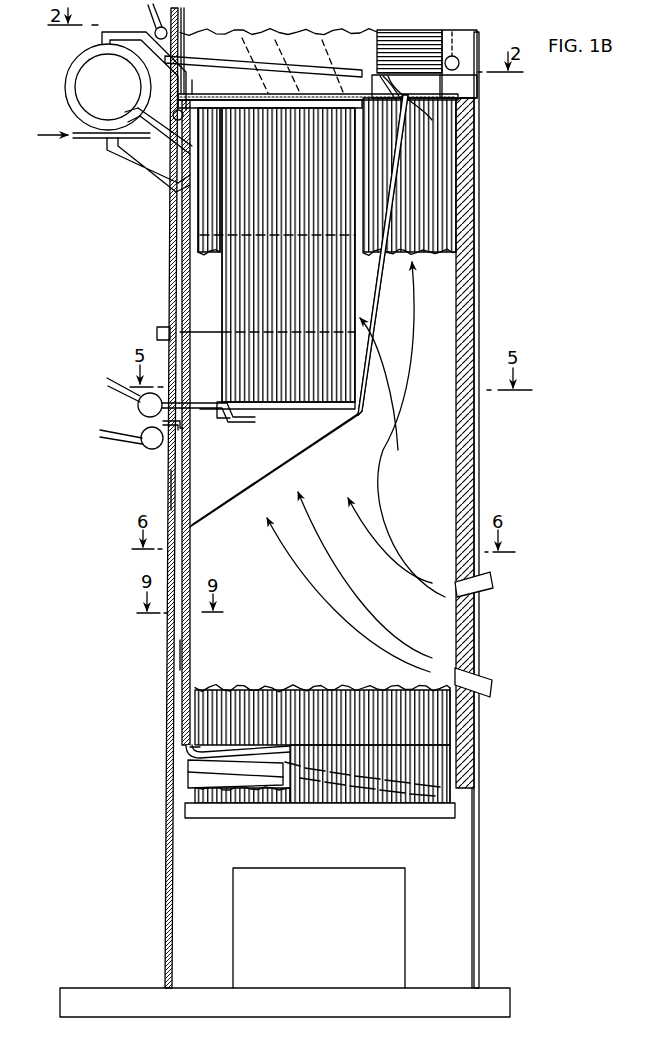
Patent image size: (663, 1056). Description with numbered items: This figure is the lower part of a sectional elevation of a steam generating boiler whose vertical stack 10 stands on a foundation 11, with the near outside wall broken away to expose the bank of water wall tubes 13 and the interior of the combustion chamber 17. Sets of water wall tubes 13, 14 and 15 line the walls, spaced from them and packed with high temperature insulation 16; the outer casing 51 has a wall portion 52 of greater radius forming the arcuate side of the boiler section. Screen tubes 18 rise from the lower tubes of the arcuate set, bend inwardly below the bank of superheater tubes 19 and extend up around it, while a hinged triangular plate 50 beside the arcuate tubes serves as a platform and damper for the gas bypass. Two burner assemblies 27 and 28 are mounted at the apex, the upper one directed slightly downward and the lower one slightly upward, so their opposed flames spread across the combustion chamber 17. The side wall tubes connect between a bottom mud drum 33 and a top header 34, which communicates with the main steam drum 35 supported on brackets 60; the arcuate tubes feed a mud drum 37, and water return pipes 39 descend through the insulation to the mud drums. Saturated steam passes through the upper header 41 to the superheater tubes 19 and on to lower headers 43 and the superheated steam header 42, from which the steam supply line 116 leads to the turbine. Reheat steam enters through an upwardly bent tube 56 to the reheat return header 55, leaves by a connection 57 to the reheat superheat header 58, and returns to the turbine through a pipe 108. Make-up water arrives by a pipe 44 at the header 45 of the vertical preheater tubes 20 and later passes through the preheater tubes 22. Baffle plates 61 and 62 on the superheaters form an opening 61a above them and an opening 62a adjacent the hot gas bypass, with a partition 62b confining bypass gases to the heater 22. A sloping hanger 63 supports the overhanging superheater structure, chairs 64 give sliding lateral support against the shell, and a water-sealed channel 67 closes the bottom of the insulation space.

The vertical stack 10 is at (116, 300).
The foundation 11 is at (103, 1020).
The water wall tubes 13 is at (438, 736).
The water wall tubes 14 is at (192, 478).
The water wall tubes 15 is at (420, 255).
The high temperature insulation 16 is at (176, 276).
The combustion chamber 17 is at (336, 487).
The screen tubes 18 is at (383, 302).
The superheater tubes 19 is at (343, 277).
The vertical water preheater tubes 20 is at (184, 40).
The water preheater tubes 22 is at (377, 48).
The burner assembly 27 is at (493, 582).
The burner assembly 28 is at (488, 680).
The bottom header or mud drum 33 is at (222, 820).
The top header 34 is at (318, 86).
The main steam drum 35 is at (66, 78).
The mud drum 37 is at (190, 772).
The water return pipes 39 is at (176, 655).
The upper header 41 is at (264, 106).
The superheated steam header 42 is at (138, 405).
The lower headers or manifolds 43 is at (255, 410).
The make-up water pipe 44 is at (94, 148).
The header of the vertical preheater tubes 45 is at (150, 112).
The triangular plate 50 is at (210, 234).
The casing 51 is at (478, 283).
The wall portion 52 is at (172, 490).
The reheat return header 55 is at (168, 31).
The upwardly bent tube 56 is at (150, 30).
The connection 57 is at (160, 423).
The reheat superheat header 58 is at (150, 449).
The brackets 60 is at (108, 160).
The baffle plate 61 is at (235, 97).
The opening 61a is at (276, 96).
The baffle plate 62 is at (368, 96).
The opening 62a is at (470, 88).
The partition 62b is at (430, 118).
The sloping hanger 63 is at (276, 42).
The spacing elements or chairs 64 is at (172, 312).
The trough or channel 67 is at (184, 748).
The pipe 108 is at (104, 432).
The steam supply line 116 is at (112, 384).